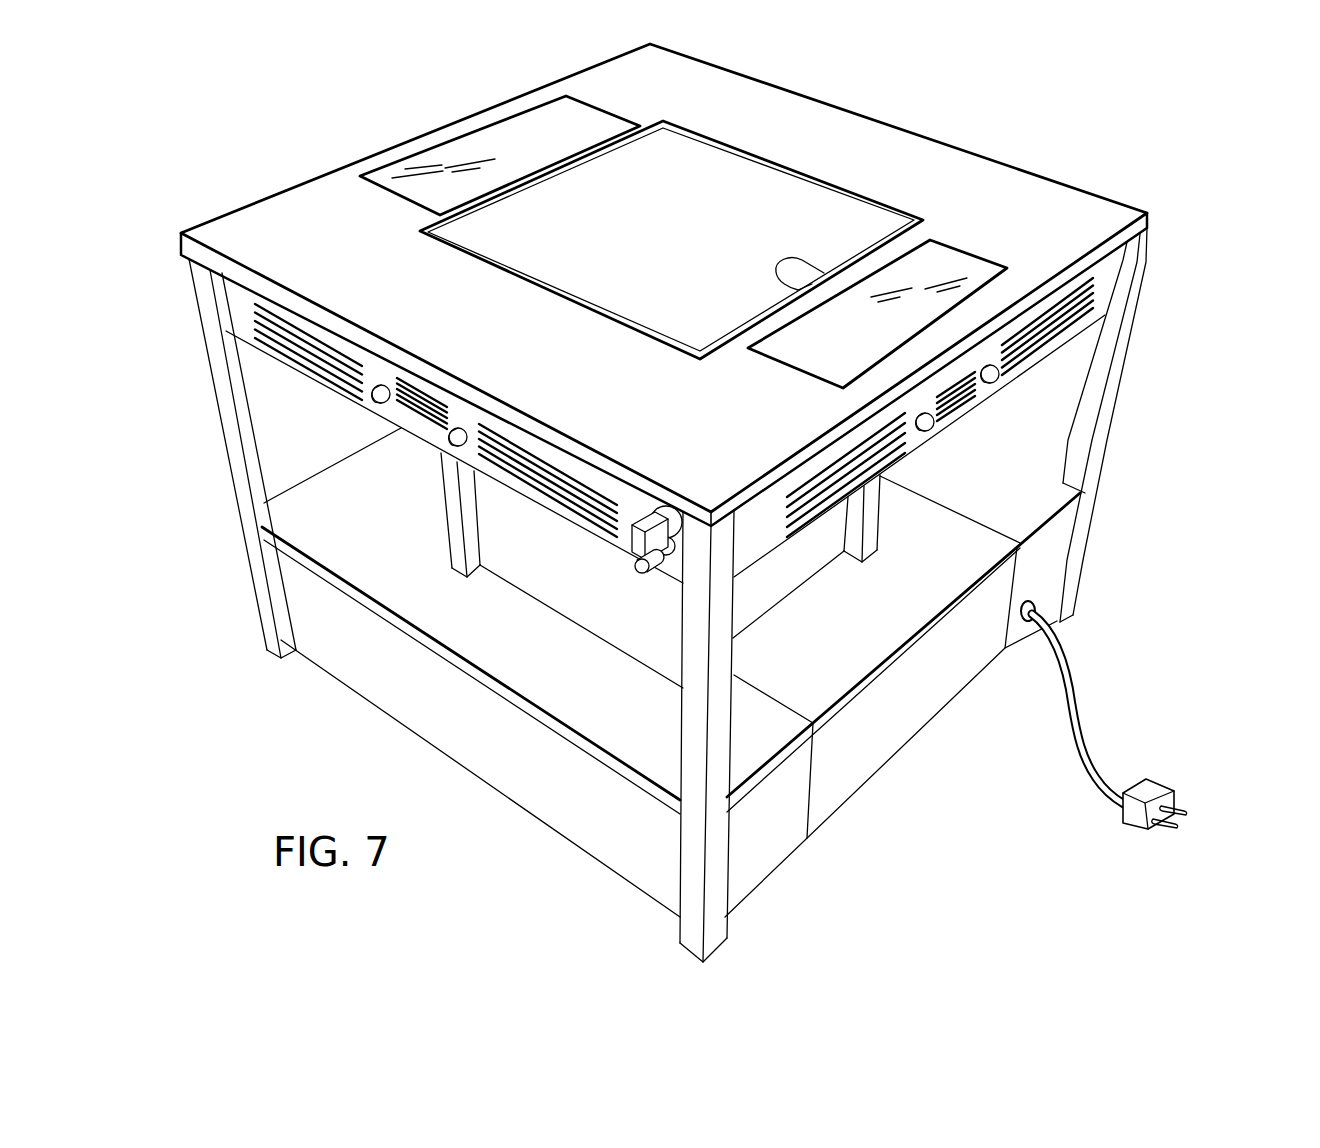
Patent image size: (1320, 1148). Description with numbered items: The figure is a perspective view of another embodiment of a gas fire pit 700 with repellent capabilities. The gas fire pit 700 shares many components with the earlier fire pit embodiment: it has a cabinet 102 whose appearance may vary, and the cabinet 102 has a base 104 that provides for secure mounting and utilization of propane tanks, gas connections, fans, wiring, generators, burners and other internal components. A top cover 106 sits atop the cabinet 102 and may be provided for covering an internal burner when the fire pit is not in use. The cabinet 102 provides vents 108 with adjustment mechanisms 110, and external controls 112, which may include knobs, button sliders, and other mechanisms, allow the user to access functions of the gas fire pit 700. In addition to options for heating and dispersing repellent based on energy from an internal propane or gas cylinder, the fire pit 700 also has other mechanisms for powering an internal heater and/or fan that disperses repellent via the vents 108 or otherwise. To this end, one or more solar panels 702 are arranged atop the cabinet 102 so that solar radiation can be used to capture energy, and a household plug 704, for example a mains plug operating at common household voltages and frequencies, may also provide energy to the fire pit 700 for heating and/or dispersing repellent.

The gas fire pit 700 is at (1002, 110).
The cabinet 102 is at (1150, 262).
The base 104 is at (1088, 549).
The top cover 106 is at (692, 242).
The vents 108 is at (340, 382).
The adjustment mechanisms 110 is at (371, 401).
The external controls 112 is at (634, 541).
The solar panels 702 is at (490, 121).
The household plug 704 is at (1152, 782).